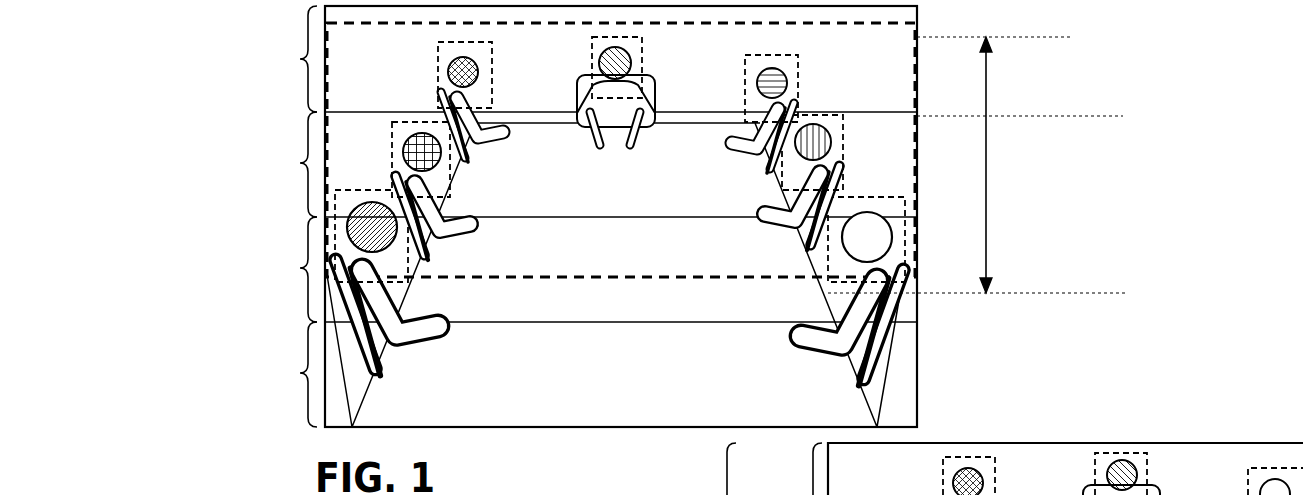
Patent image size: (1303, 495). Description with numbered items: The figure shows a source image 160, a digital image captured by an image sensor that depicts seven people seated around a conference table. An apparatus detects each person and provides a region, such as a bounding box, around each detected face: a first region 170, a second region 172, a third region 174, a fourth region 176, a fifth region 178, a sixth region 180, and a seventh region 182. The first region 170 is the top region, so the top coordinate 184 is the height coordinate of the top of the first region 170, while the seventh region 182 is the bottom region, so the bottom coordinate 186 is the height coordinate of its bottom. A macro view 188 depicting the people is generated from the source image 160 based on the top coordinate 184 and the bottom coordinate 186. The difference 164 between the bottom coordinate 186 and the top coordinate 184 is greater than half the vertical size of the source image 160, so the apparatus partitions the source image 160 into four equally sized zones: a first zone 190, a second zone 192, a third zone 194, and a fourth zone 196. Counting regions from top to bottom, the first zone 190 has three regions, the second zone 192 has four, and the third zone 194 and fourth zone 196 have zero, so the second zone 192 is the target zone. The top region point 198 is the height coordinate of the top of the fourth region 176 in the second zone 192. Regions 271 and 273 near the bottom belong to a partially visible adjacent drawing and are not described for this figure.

In FIG. 1, the source image 160 is at (917, 372).
In FIG. 1, the difference 164 is at (986, 206).
In FIG. 1, the first region 170 is at (642, 66).
In FIG. 1, the second region 172 is at (492, 68).
In FIG. 1, the third region 174 is at (798, 68).
In FIG. 1, the fourth region 176 is at (843, 137).
In FIG. 1, the fifth region 178 is at (392, 136).
In FIG. 1, the sixth region 180 is at (343, 188).
In FIG. 1, the seventh region 182 is at (890, 197).
In FIG. 1, the top coordinate 184 is at (1045, 37).
In FIG. 1, the bottom coordinate 186 is at (1048, 293).
In FIG. 1, the macro view 188 is at (585, 280).
In FIG. 1, the first zone 190 is at (230, 59).
In FIG. 1, the second zone 192 is at (514, 164).
In FIG. 1, the third zone 194 is at (520, 269).
In FIG. 1, the fourth zone 196 is at (517, 374).
In FIG. 1, the top region point 198 is at (1045, 116).
In FIG. 2, the participant 271 is at (1147, 477).
In FIG. 2, the participant 273 is at (995, 477).